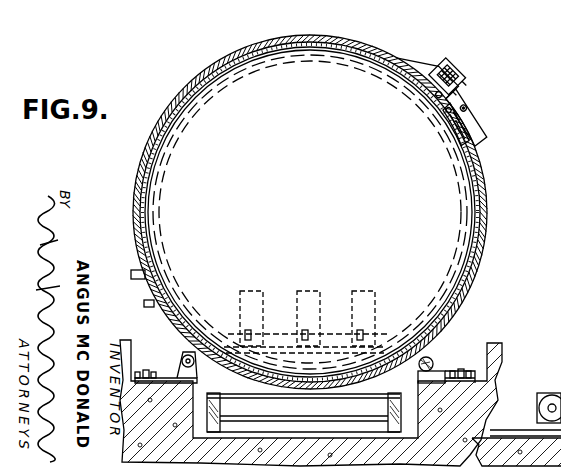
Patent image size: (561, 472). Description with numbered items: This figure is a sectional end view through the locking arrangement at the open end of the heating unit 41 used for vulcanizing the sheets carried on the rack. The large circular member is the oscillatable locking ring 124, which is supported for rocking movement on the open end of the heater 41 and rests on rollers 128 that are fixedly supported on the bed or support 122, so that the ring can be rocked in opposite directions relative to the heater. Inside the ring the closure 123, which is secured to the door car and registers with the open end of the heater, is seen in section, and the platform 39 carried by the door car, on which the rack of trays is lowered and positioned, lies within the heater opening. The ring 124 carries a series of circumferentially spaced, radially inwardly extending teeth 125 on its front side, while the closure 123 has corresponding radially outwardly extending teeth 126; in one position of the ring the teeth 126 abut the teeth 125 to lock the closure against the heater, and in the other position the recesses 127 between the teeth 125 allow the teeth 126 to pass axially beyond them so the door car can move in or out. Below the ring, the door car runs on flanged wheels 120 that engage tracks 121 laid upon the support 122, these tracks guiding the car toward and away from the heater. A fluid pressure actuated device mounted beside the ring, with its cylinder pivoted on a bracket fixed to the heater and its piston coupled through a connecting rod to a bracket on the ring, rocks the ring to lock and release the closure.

The platform 39 is at (316, 334).
The heating unit 41 is at (327, 202).
The flanged wheels 120 is at (410, 388).
The tracks 121 is at (397, 436).
The support 122 is at (478, 381).
The closure 123 is at (217, 118).
The locking ring 124 is at (485, 207).
The teeth 125 is at (480, 165).
The teeth 126 is at (270, 52).
The recesses 127 is at (493, 221).
The rollers 128 is at (178, 352).